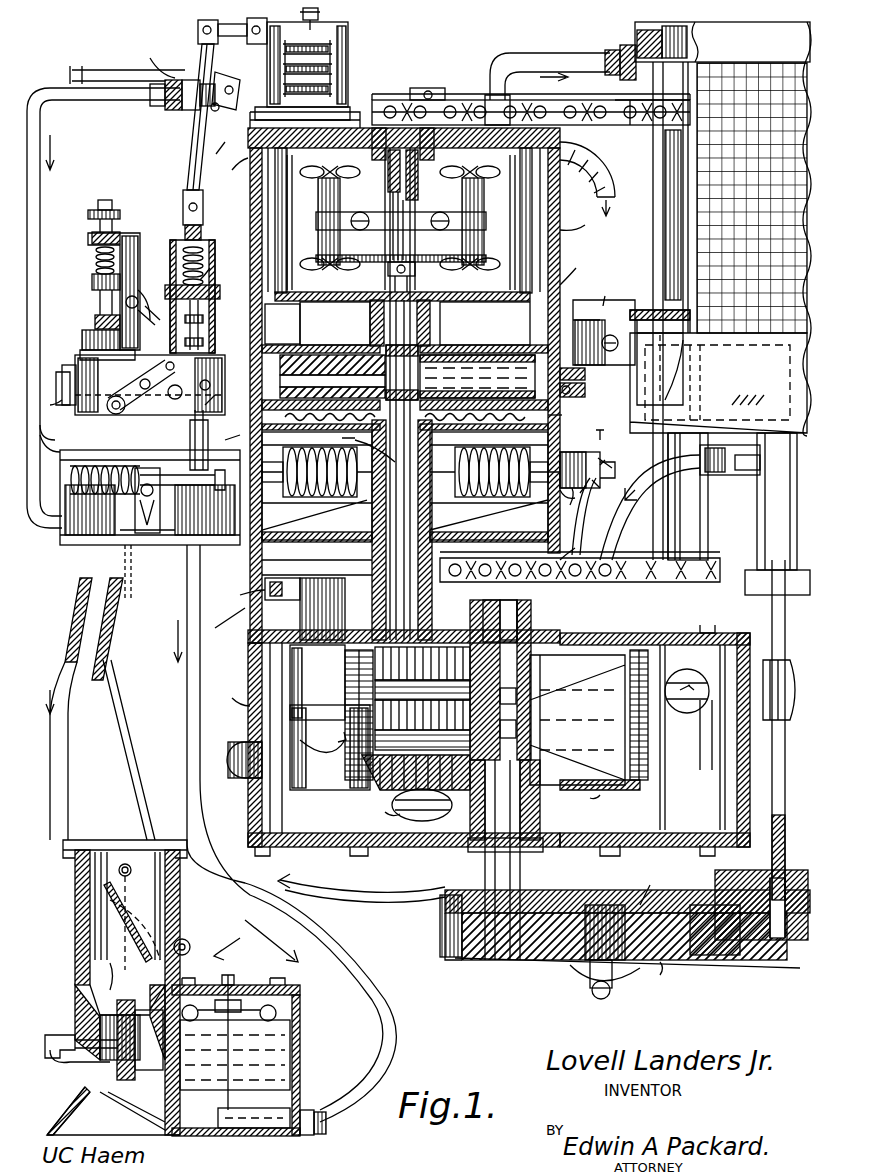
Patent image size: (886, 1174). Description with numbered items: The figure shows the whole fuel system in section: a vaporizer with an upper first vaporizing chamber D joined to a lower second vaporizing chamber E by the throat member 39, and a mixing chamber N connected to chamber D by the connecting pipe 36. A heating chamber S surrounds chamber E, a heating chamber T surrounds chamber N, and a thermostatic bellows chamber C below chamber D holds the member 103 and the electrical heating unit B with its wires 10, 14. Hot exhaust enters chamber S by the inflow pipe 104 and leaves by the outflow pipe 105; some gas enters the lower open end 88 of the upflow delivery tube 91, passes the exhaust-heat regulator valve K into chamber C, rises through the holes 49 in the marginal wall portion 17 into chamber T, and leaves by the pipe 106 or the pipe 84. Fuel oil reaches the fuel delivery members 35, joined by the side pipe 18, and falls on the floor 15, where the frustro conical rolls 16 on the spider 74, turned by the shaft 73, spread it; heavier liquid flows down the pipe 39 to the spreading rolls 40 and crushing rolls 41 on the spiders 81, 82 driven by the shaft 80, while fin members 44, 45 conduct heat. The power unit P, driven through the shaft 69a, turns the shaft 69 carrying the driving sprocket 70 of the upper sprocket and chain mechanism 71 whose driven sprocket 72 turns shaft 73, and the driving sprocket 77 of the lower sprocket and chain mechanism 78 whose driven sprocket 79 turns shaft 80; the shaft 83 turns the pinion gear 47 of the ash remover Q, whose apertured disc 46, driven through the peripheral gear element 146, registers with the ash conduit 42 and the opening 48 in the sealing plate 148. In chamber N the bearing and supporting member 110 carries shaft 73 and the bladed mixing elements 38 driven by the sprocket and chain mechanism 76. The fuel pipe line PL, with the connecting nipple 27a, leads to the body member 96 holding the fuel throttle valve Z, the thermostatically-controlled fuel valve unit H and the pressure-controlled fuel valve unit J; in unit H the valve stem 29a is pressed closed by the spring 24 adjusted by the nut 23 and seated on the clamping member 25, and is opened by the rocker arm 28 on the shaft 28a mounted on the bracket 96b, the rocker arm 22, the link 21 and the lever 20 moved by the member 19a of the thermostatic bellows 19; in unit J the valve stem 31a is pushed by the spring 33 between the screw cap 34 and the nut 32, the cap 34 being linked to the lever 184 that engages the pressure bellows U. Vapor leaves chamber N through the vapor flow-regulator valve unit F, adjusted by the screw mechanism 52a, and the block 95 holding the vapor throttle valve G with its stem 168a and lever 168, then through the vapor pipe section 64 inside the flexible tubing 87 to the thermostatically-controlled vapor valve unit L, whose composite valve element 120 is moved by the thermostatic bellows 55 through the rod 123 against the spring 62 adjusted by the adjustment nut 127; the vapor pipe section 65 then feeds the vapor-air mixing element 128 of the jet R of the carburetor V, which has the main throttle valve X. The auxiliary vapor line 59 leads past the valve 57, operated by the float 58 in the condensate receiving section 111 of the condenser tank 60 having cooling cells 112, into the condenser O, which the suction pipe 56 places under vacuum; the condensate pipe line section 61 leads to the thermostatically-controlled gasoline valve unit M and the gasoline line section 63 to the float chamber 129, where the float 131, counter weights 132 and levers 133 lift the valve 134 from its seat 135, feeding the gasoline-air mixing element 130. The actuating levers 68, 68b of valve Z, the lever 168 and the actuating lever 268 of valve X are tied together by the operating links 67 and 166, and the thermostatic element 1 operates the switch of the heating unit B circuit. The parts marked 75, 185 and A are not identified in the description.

The thermostatic element 1 is at (462, 497).
The heating element wire 10 is at (601, 437).
The heating element wire 14 is at (597, 490).
The annular upper surface or floor 15 is at (489, 308).
The frustro conical rolls 16 is at (360, 343).
The marginal wall portion 17 is at (324, 315).
The side pipe 18 is at (575, 390).
The thermostatic bellows 19 is at (378, 457).
The member 19a is at (225, 433).
The lever 20 is at (190, 445).
The link 21 is at (98, 310).
The rocker arm 22 is at (92, 290).
The nut 23 is at (88, 214).
The spring 24 is at (92, 250).
The clamping member 25 is at (94, 266).
The connecting nipple 27a is at (75, 365).
The rocker arm 28 is at (143, 290).
The shaft 28a is at (218, 395).
The valve stem 29a is at (104, 200).
The valve stem 31a is at (221, 266).
The nut 32 is at (170, 286).
The spring 33 is at (204, 262).
The screw cap 34 is at (202, 215).
The fuel delivery member 35 is at (585, 370).
The connecting pipe 36 is at (432, 322).
The bladed mixing elements 38 is at (397, 210).
The throat member 39 is at (398, 394).
The spreading rolls 40 is at (672, 686).
The crushing rolls 41 is at (400, 805).
The ash conduit 42 is at (505, 860).
The fin member 44 is at (660, 728).
The fin member 45 is at (640, 790).
The apertured disc 46 is at (655, 885).
The pinion gear 47 is at (788, 940).
The opening 48 is at (712, 962).
The holes 49 is at (560, 306).
The screw mechanism 52a is at (327, 16).
The thermostatic bellows 55 is at (312, 472).
The suction pipe 56 is at (622, 476).
The valve 57 is at (606, 50).
The float 58 is at (660, 357).
The auxiliary vapor line 59 is at (548, 46).
The condenser tank 60 is at (718, 383).
The condensate pipe line section 61 is at (250, 584).
The spring 62 is at (115, 462).
The gasoline line section 63 is at (186, 590).
The vapor pipe section 64 is at (106, 86).
The vapor pipe section 65 is at (58, 755).
The operating link 67 is at (225, 155).
The actuating lever 68 is at (118, 396).
The actuating lever 68b is at (189, 383).
The shaft 69 is at (653, 165).
The shaft 69a is at (604, 332).
The driving sprocket 70 is at (630, 125).
The upper sprocket and chain mechanism 71 is at (465, 98).
The driven sprocket 72 is at (428, 88).
The shaft 73 is at (435, 158).
The spider 74 is at (398, 418).
The collar 75 is at (388, 268).
The sprocket and chain mechanism 76 is at (338, 250).
The driving sprocket 77 is at (695, 560).
The lower sprocket and chain mechanism 78 is at (612, 560).
The driven sprocket 79 is at (579, 545).
The shaft 80 is at (500, 621).
The spider 81 is at (503, 692).
The spider 82 is at (507, 726).
The shaft 83 is at (785, 768).
The pipe 84 is at (232, 172).
The flexible tubing 87 is at (88, 68).
The lower open end 88 is at (330, 747).
The upflow delivery tube 91 is at (317, 639).
The block 95 is at (227, 76).
The body member 96 is at (53, 390).
The bracket 96b is at (140, 236).
The member 103 is at (404, 445).
The inflow pipe 104 is at (240, 765).
The outflow pipe 105 is at (790, 676).
The pipe 106 is at (608, 179).
The bearing and supporting member 110 is at (412, 206).
The condensate receiving section 111 is at (752, 409).
The cooling cells 112 is at (740, 90).
The composite valve element 120 is at (128, 555).
The rod 123 is at (157, 500).
The adjustment nut 127 is at (67, 438).
The vapor-air mixing element 128 is at (75, 1062).
The float chamber 129 is at (290, 1058).
The gasoline-air mixing element 130 is at (131, 1025).
The float 131 is at (278, 1013).
The counter weights 132 is at (295, 1002).
The levers 133 is at (238, 995).
The valve 134 is at (290, 1098).
The seat 135 is at (245, 1136).
The peripheral gear element 146 is at (445, 940).
The sealing plate 148 is at (500, 960).
The operating link 166 is at (130, 758).
The lever 168 is at (250, 110).
The valve stem 168a is at (172, 110).
The lever 184 is at (232, 22).
The lever 185 is at (202, 48).
The actuating lever 268 is at (186, 940).
The clutch A is at (582, 503).
The electrical heating unit B is at (565, 413).
The thermostatic bellows chamber C is at (353, 510).
The first vaporizing chamber D is at (578, 267).
The second vaporizing chamber E is at (577, 710).
The vapor flow-regulator valve unit F is at (350, 38).
The vapor throttle valve G is at (152, 55).
The thermostatically-controlled fuel valve unit H is at (125, 233).
The pressure-controlled fuel valve unit J is at (216, 242).
The exhaust-heat regulator valve K is at (225, 624).
The thermostatically-controlled vapor valve unit L is at (90, 510).
The thermostatically-controlled gasoline valve unit M is at (205, 510).
The mixing chamber N is at (401, 222).
The condenser O is at (636, 22).
The power unit P is at (605, 288).
The fuel pipe line PL is at (83, 320).
The ash remover Q is at (657, 981).
The carburetor jet member R is at (103, 962).
The heating chamber S is at (409, 744).
The heating chamber T is at (572, 228).
The pressure bellows U is at (348, 52).
The carburetor V is at (256, 937).
The main throttle valve X is at (132, 917).
The fuel throttle valve Z is at (150, 385).